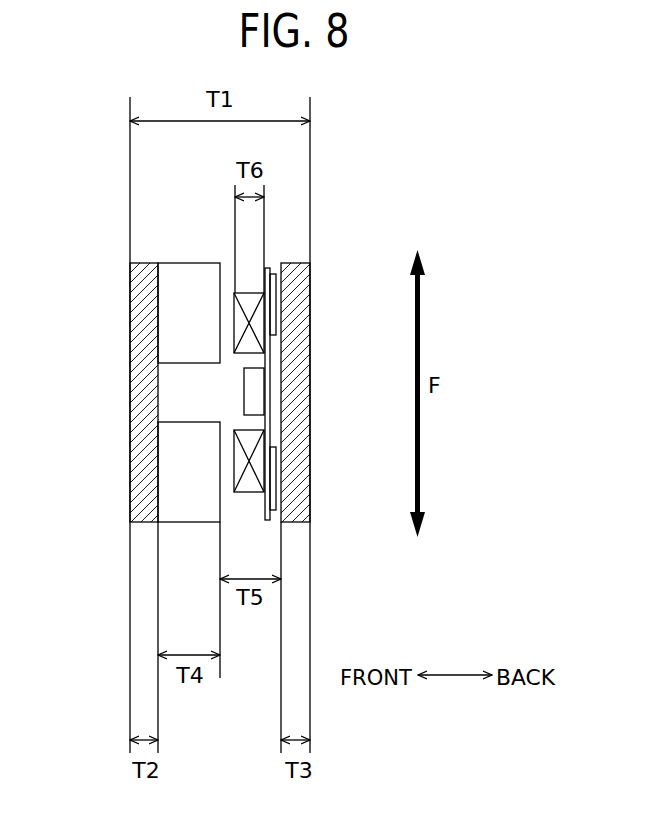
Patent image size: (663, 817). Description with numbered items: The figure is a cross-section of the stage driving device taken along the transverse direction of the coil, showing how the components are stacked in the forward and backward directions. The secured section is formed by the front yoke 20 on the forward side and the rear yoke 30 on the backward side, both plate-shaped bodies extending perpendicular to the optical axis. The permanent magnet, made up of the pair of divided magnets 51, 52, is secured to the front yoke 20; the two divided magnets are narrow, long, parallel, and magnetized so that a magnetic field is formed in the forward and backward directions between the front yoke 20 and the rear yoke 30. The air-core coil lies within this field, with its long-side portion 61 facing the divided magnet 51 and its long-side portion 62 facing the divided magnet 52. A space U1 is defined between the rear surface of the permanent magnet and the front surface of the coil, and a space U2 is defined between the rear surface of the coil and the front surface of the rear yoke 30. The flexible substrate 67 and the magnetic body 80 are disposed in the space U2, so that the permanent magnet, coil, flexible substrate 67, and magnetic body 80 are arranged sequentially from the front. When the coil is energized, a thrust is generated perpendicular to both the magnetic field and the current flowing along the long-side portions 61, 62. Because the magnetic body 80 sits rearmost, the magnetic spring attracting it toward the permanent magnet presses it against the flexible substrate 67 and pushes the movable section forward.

The front yoke 20 is at (142, 388).
The rear yoke 30 is at (300, 379).
The divided magnet 51 is at (177, 292).
The divided magnet 52 is at (172, 505).
The long-side portion 61 is at (264, 311).
The long-side portion 62 is at (258, 465).
The flexible substrate 67 is at (265, 416).
The magnetic body 80 is at (276, 288).
The space U1 is at (228, 303).
The space U2 is at (274, 342).